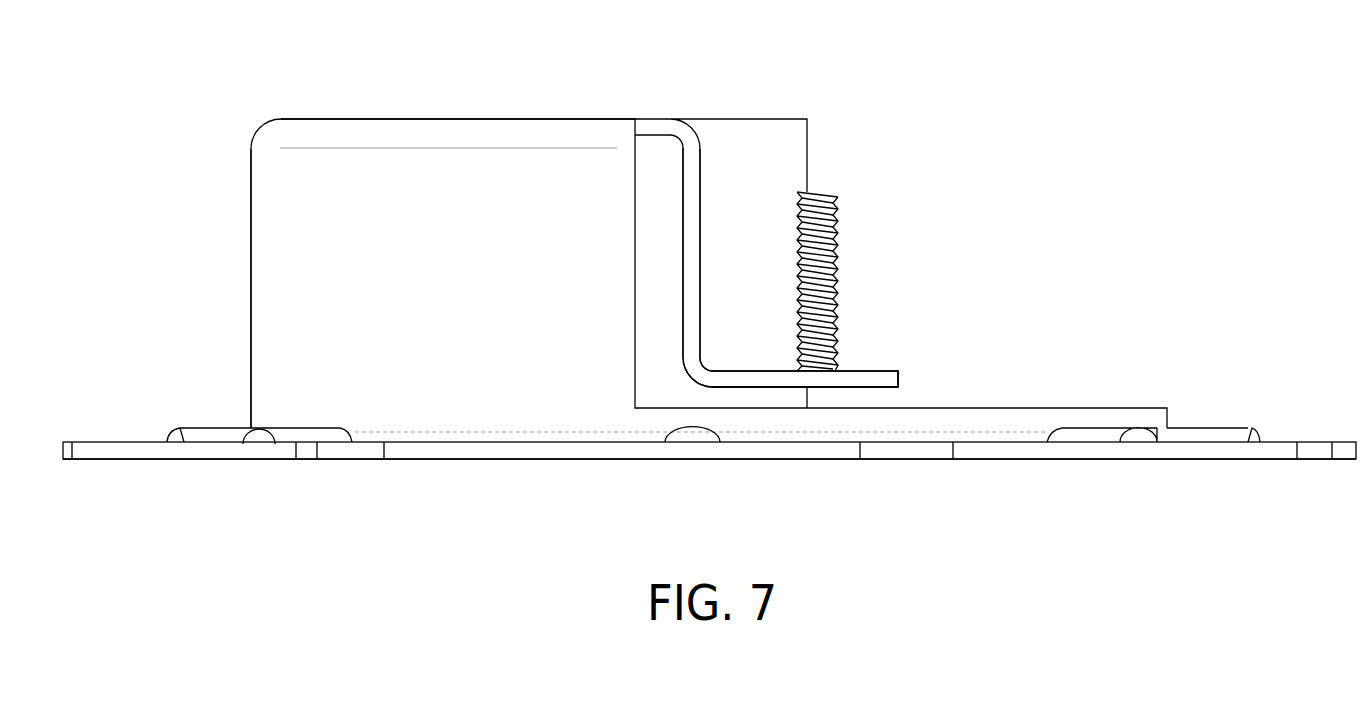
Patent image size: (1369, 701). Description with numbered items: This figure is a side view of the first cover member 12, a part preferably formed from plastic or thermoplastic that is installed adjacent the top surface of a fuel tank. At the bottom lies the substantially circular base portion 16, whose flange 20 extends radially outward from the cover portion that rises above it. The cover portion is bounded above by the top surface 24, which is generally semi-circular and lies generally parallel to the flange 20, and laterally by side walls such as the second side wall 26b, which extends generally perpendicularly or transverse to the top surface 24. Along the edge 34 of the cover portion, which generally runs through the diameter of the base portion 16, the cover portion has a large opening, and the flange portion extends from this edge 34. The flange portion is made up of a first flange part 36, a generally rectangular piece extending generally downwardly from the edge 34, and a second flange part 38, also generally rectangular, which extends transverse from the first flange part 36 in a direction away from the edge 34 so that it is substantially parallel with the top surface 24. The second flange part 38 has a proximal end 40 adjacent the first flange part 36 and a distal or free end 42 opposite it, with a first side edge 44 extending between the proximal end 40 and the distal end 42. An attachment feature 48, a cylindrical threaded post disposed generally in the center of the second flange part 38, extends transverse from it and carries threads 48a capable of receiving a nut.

The first cover member 12 is at (483, 118).
The base portion 16 is at (1278, 442).
The flange 20 is at (1260, 459).
The top surface 24 is at (365, 118).
The second side wall 26b is at (287, 300).
The edge 34 is at (753, 125).
The first flange part 36 is at (702, 212).
The second flange part 38 is at (882, 370).
The proximal end 40 is at (705, 365).
The distal end 42 is at (898, 377).
The first side edge 44 is at (767, 377).
The attachment feature 48 is at (837, 213).
The threads 48a is at (837, 270).